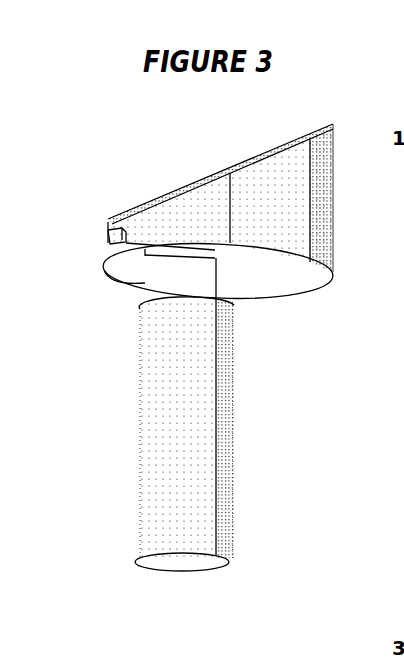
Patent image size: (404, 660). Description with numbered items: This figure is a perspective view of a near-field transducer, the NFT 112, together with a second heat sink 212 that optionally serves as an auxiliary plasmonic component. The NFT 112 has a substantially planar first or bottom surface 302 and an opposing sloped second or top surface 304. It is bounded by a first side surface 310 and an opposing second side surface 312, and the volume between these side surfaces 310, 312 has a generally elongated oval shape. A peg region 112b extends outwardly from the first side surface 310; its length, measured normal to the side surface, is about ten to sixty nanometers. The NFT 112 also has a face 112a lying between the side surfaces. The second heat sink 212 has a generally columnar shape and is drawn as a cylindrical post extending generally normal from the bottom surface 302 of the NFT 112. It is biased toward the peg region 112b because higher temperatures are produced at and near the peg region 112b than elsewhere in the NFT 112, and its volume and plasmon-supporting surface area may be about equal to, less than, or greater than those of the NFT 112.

The NFT 112 is at (217, 199).
The top surface 304 is at (255, 152).
The mounting bracket face 112a is at (220, 200).
The second side surface 312 is at (327, 205).
The first side surface 310 is at (108, 226).
The peg region 112b is at (110, 233).
The bottom surface 302 is at (305, 282).
The second heat sink 212 is at (226, 427).